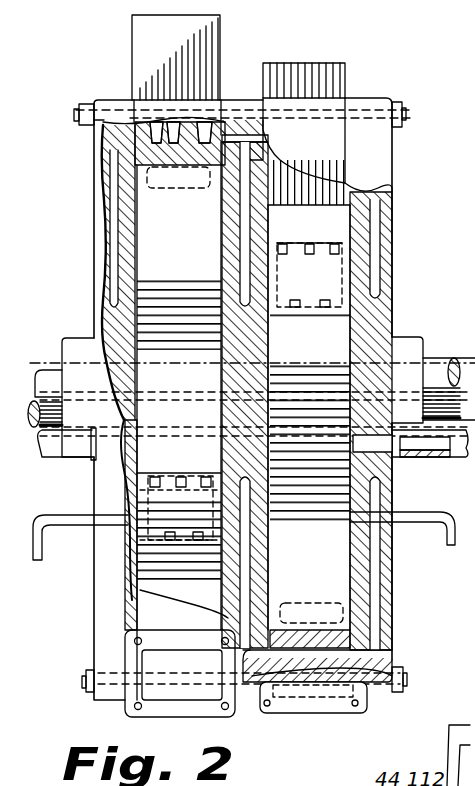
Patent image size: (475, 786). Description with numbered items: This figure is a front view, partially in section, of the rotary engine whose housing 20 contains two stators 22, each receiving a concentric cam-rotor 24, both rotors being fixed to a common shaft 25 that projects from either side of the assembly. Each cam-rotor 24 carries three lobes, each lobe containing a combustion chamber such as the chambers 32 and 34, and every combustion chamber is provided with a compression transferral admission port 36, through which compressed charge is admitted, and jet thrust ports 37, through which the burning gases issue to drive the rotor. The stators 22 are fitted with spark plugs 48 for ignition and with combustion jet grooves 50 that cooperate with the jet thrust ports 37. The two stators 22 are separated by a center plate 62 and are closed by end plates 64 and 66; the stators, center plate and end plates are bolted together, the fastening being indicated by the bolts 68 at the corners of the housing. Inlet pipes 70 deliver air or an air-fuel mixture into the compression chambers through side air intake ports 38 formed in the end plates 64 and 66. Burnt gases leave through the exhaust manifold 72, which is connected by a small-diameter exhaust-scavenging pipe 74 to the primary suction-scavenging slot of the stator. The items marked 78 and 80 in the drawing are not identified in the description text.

The housing 20 is at (385, 93).
The stator 22 is at (143, 113).
The cam-rotor 24 is at (188, 241).
The common shaft 25 is at (45, 371).
The combustion chamber 32 is at (175, 189).
The combustion chamber 34 is at (165, 475).
The compression transferral admission port 36 is at (322, 302).
The jet thrust port 37 is at (340, 243).
The side air intake port 38 is at (128, 452).
The spark plug 48 is at (153, 133).
The combustion jet groove 50 is at (150, 157).
The center plate 62 is at (238, 106).
The end plate 64 is at (93, 219).
The end plate 66 is at (380, 177).
The bolt 68 is at (407, 112).
The inlet pipe 70 is at (46, 460).
The exhaust manifold 72 is at (285, 711).
The exhaust-scavenging pipe 74 is at (73, 527).
The bracket 78 is at (458, 725).
The cooling fins 80 is at (219, 47).